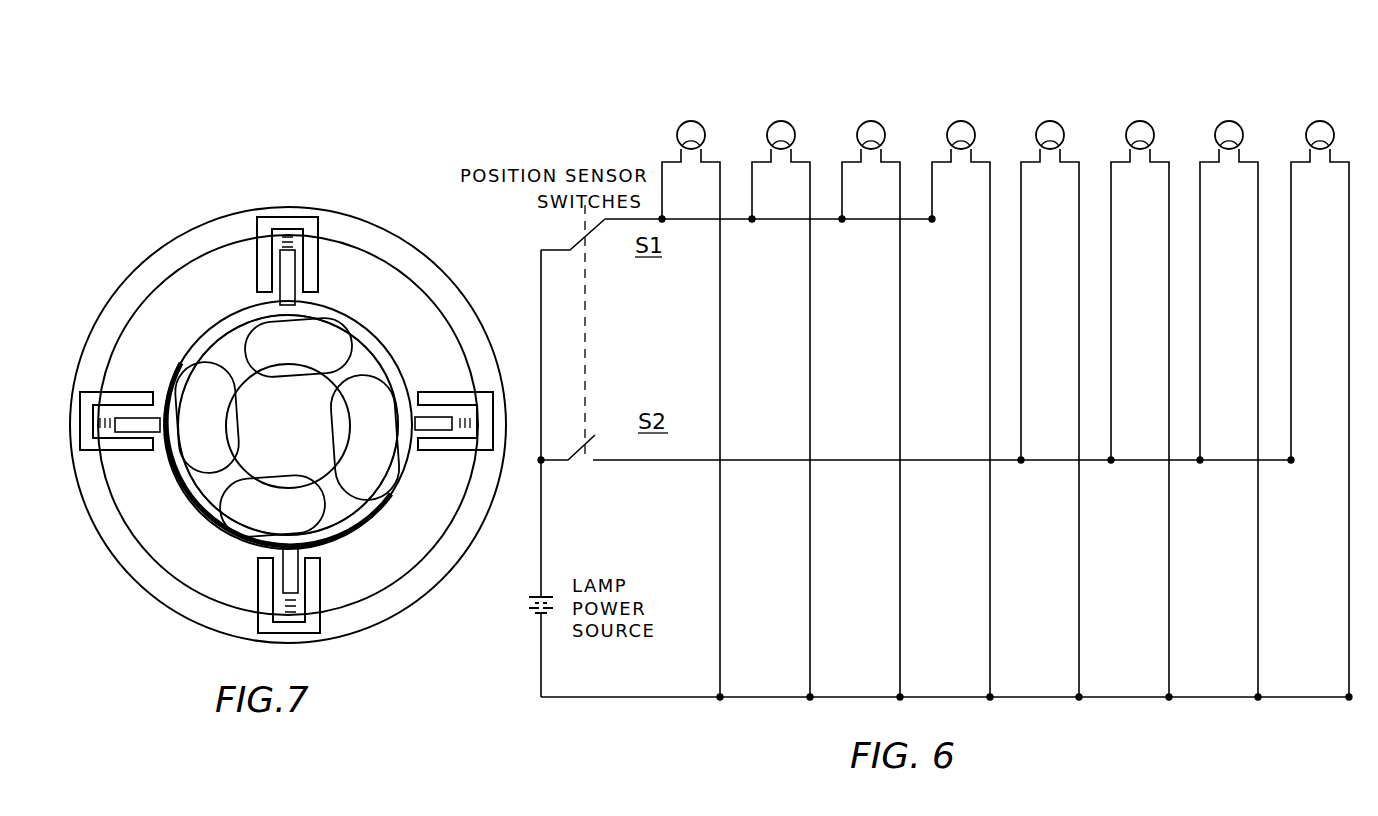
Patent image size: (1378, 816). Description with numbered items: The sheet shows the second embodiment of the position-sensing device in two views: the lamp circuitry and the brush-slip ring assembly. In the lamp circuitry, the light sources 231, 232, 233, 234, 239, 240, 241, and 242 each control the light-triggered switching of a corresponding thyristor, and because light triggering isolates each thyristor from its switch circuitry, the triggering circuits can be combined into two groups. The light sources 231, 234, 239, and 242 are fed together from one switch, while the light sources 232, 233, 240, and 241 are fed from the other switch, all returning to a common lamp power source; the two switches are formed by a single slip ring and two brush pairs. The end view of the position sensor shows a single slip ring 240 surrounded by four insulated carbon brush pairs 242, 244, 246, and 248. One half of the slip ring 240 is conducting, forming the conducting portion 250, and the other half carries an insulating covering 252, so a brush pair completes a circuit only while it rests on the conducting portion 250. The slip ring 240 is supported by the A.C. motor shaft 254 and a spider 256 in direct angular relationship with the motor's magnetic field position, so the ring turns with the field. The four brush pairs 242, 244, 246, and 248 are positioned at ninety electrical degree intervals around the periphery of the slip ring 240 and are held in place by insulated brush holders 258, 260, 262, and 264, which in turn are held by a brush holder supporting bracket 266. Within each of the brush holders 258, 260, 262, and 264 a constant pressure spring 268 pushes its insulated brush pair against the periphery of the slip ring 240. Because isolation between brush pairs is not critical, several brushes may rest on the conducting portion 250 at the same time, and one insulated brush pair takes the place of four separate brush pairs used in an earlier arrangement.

In FIG. 6, the light source 231 is at (704, 100).
In FIG. 6, the light source 232 is at (1063, 100).
In FIG. 6, the light source 233 is at (1153, 100).
In FIG. 6, the light source 234 is at (794, 100).
In FIG. 6, the light source 239 is at (884, 100).
In FIG. 7, the slip ring 240 is at (398, 498).
In FIG. 6, the slip ring 240 is at (1242, 100).
In FIG. 6, the light source 241 is at (1333, 100).
In FIG. 7, the carbon brush pair 242 is at (280, 298).
In FIG. 6, the carbon brush pair 242 is at (974, 100).
In FIG. 7, the carbon brush pair 244 is at (432, 417).
In FIG. 7, the carbon brush pair 246 is at (283, 570).
In FIG. 7, the carbon brush pair 248 is at (135, 432).
In FIG. 7, the conducting half of slip ring 250 is at (352, 302).
In FIG. 7, the insulating covering 252 is at (212, 524).
In FIG. 7, the A.C. motor shaft 254 is at (310, 437).
In FIG. 7, the spider 256 is at (360, 383).
In FIG. 7, the insulated brush holder 258 is at (320, 227).
In FIG. 7, the insulated brush holder 260 is at (455, 449).
In FIG. 7, the insulated brush holder 262 is at (318, 590).
In FIG. 7, the insulated brush holder 264 is at (136, 392).
In FIG. 7, the brush holder supporting bracket 266 is at (405, 592).
In FIG. 7, the constant pressure spring 268 is at (472, 422).